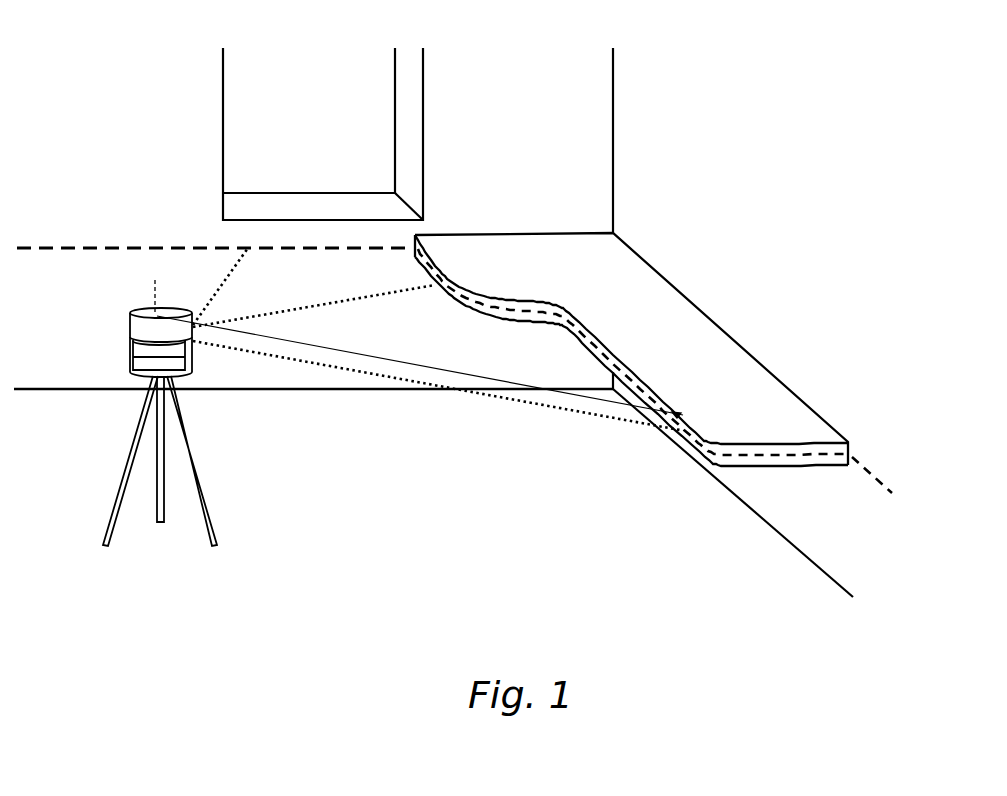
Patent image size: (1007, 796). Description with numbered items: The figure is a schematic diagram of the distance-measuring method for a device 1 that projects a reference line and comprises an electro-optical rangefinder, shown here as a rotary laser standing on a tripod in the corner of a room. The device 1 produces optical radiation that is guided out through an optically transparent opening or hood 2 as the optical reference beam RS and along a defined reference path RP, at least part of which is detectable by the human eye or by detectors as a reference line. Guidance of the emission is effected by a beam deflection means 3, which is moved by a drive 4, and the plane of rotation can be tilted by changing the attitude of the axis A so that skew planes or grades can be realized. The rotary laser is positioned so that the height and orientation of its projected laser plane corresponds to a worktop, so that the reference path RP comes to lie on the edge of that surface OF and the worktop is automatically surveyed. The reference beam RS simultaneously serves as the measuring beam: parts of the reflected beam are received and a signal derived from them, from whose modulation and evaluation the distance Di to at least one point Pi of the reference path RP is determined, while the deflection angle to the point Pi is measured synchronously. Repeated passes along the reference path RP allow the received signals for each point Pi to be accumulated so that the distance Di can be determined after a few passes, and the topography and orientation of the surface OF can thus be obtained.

The device 1 is at (129, 405).
The optically transparent opening or hood 2 is at (135, 326).
The beam deflection means 3 is at (143, 349).
The drive 4 is at (146, 362).
The axis A is at (155, 300).
The reference path RP is at (175, 248).
The reference beam RS is at (436, 339).
The distance Di is at (381, 357).
The point Pi is at (677, 420).
The surface OF is at (709, 194).